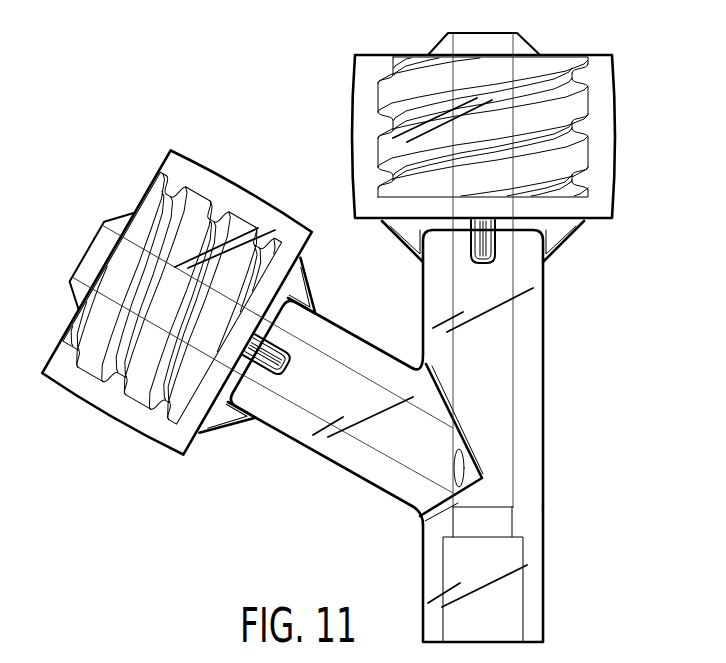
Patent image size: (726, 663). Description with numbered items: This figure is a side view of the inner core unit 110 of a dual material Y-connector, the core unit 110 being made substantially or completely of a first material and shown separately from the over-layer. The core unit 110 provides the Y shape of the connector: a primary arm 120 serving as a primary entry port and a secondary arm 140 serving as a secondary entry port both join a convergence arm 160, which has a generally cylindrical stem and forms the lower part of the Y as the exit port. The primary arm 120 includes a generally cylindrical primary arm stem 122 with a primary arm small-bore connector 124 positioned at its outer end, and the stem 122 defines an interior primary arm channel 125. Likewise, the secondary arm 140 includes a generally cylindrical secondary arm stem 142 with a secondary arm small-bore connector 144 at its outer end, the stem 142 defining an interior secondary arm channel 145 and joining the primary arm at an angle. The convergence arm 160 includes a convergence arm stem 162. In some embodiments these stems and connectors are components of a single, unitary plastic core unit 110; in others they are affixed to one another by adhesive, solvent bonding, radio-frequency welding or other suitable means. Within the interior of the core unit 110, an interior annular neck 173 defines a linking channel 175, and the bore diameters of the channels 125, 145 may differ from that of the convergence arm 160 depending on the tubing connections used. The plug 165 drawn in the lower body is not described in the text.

The inner core unit 110 is at (262, 85).
The primary arm 120 is at (644, 28).
The primary arm stem 122 is at (543, 310).
The primary arm small-bore connector 124 is at (549, 57).
The primary arm channel 125 is at (513, 330).
The secondary arm 140 is at (333, 585).
The secondary arm stem 142 is at (353, 477).
The secondary arm small-bore connector 144 is at (126, 217).
The secondary arm channel 145 is at (315, 413).
The convergence arm 160 is at (642, 503).
The convergence arm stem 162 is at (543, 622).
The plug 165 is at (525, 625).
The interior annular neck 173 is at (518, 518).
The linking channel 175 is at (510, 520).